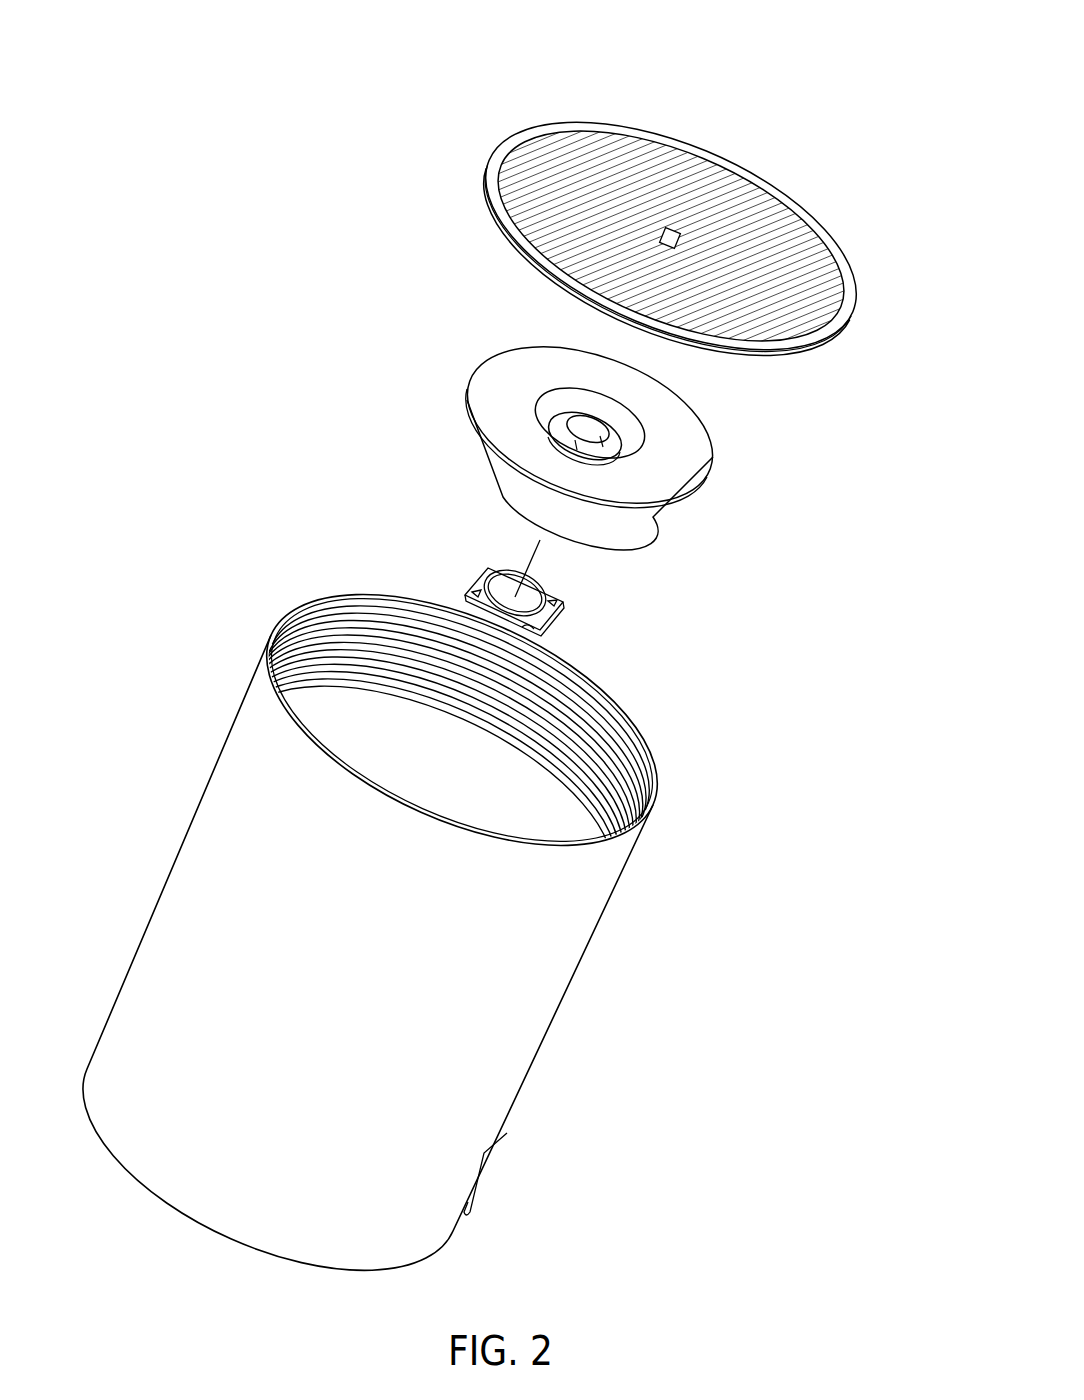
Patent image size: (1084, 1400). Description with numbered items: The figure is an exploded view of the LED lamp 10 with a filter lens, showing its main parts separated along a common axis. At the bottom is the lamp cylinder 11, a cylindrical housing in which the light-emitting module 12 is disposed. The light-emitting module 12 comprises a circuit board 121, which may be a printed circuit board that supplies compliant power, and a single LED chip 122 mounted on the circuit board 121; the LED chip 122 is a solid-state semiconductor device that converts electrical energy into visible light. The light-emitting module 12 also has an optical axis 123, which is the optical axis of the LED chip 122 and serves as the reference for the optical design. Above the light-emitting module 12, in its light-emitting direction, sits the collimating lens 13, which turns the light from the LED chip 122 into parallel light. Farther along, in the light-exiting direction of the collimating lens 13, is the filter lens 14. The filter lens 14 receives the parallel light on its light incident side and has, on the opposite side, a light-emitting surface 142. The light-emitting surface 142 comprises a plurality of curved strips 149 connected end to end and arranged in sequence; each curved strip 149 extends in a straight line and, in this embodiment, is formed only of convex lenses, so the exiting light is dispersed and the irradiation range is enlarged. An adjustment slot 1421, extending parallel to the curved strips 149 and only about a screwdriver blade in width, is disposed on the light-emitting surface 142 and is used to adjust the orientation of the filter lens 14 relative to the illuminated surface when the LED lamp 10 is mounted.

The LED lamp 10 is at (503, 29).
The lamp cylinder 11 is at (248, 900).
The light-emitting module 12 is at (396, 500).
The circuit board 121 is at (484, 597).
The LED chip 122 is at (508, 590).
The optical axis 123 is at (517, 578).
The collimating lens 13 is at (487, 400).
The filter lens 14 is at (841, 233).
The light-emitting surface 142 is at (838, 321).
The adjustment slot 1421 is at (676, 232).
The curved strip 149 is at (777, 213).